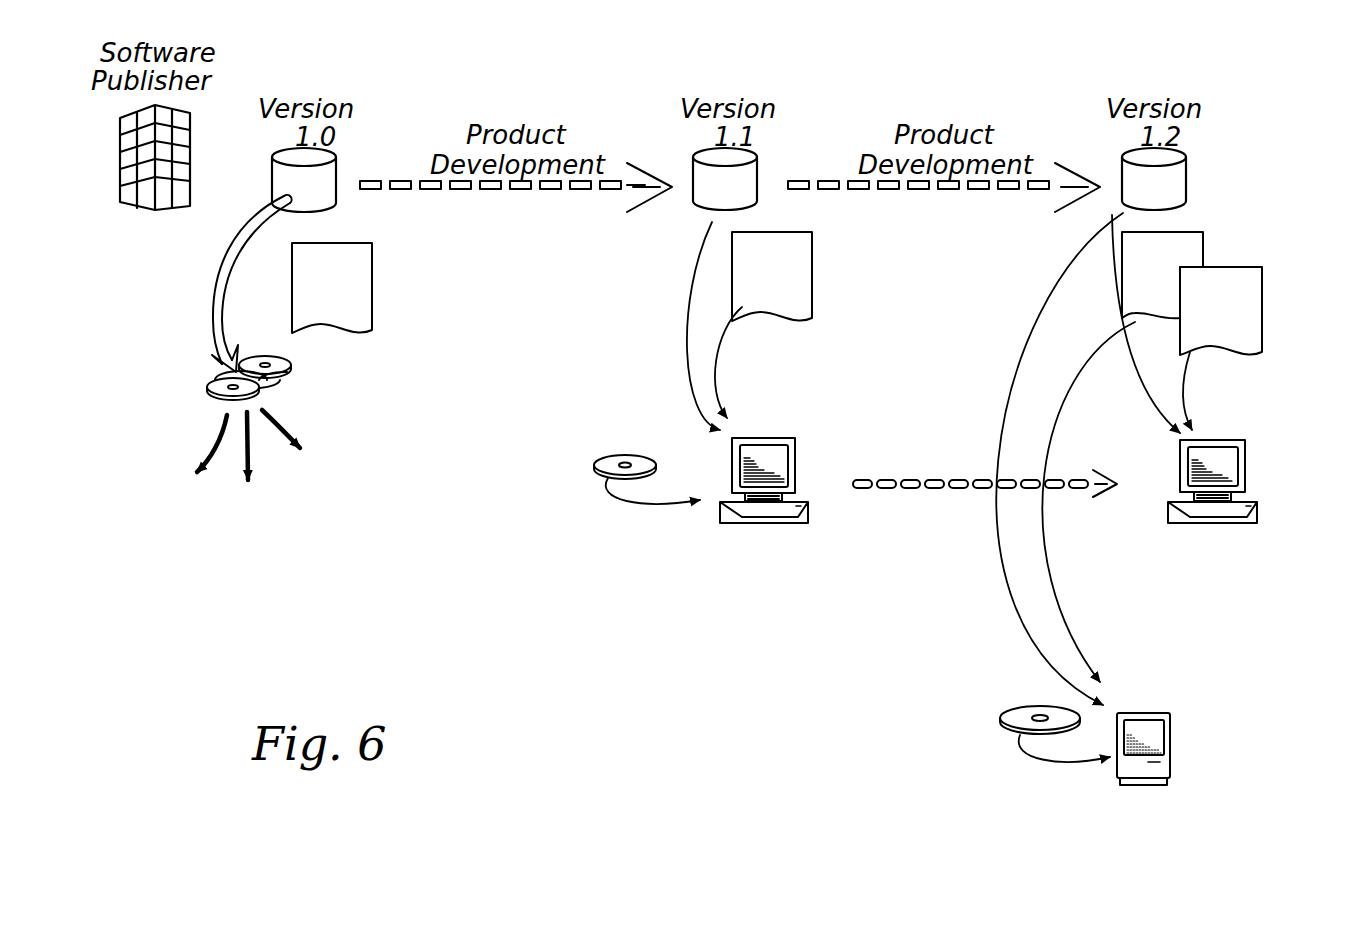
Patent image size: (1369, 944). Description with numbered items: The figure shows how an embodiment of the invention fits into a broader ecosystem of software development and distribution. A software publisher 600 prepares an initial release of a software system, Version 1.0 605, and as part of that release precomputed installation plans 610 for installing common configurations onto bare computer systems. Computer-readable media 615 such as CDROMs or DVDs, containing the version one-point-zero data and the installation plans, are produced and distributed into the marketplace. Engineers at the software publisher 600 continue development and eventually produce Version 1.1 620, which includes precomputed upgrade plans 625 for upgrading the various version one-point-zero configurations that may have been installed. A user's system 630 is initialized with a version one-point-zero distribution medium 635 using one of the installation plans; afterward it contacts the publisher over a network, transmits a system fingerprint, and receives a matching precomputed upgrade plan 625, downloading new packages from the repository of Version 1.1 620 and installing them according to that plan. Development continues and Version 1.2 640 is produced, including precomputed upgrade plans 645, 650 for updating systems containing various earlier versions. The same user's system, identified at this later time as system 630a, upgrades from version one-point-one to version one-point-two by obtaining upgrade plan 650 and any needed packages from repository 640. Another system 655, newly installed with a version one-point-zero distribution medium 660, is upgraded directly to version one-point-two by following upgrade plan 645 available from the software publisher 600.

The software publisher 600 is at (142, 210).
The Version 1.0 software system 605 is at (336, 208).
The precomputed installation plans 610 is at (372, 290).
The computer-readable media 615 is at (210, 397).
The Version 1.1 software system 620 is at (696, 210).
The precomputed upgrade plans 625 is at (812, 257).
The user's system 630 is at (722, 522).
The version 1.0 distribution medium 635 is at (598, 458).
The Version 1.2 software system 640 is at (1188, 172).
The precomputed upgrade plan 645 is at (1203, 236).
The precomputed upgrade plan 650 is at (1262, 274).
The user's system at a later time 630a is at (1170, 522).
The another system 655 is at (1119, 775).
The version 1.0 distribution medium 660 is at (1010, 710).